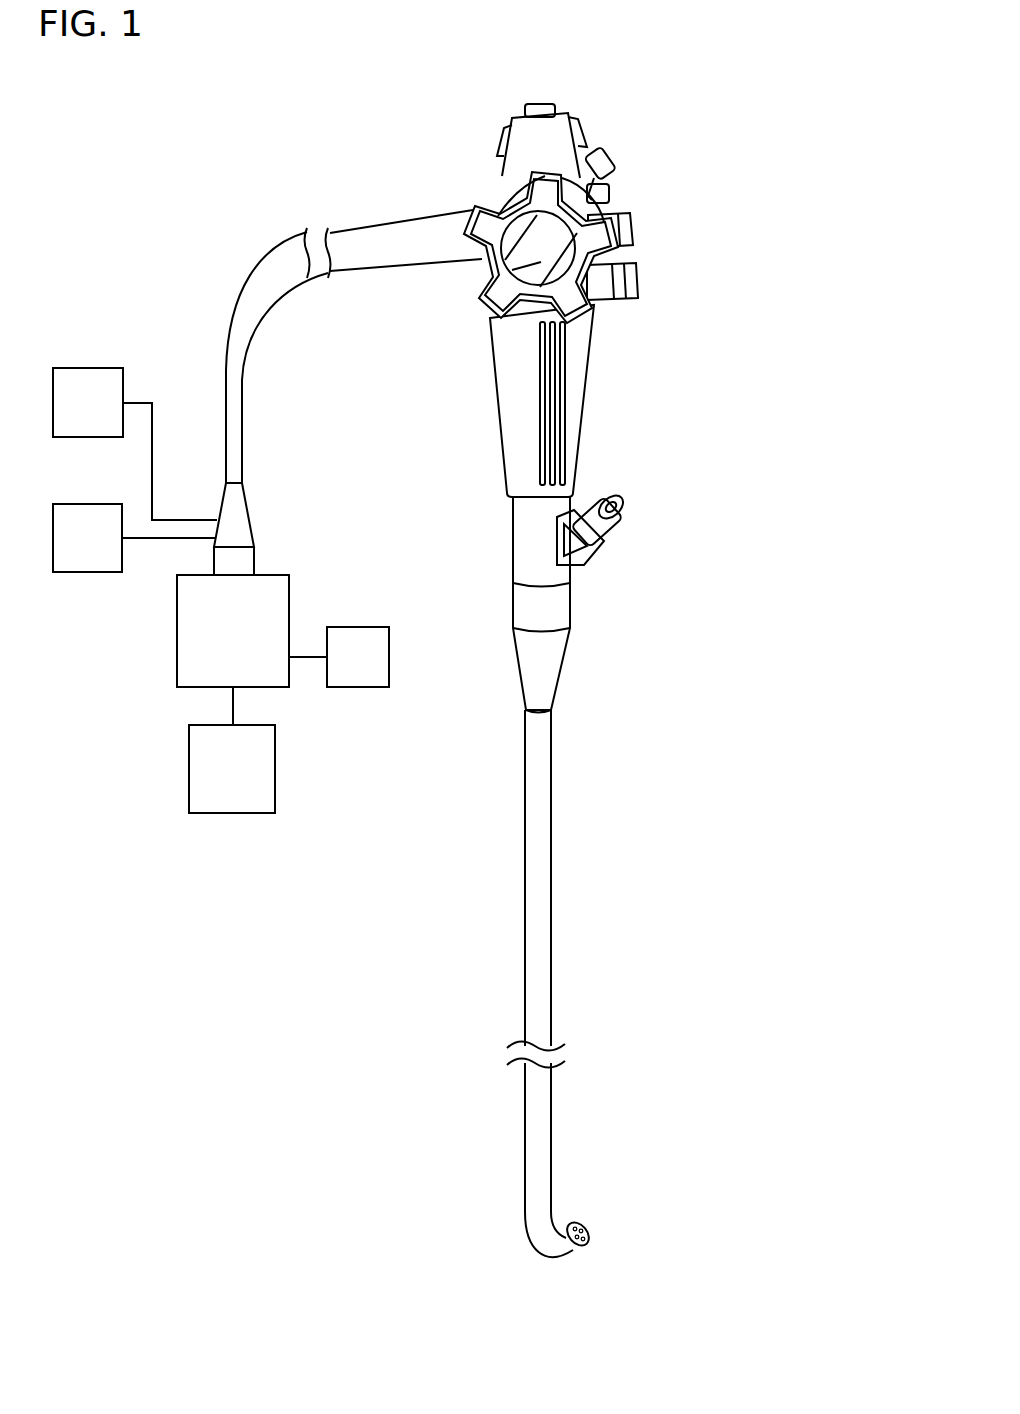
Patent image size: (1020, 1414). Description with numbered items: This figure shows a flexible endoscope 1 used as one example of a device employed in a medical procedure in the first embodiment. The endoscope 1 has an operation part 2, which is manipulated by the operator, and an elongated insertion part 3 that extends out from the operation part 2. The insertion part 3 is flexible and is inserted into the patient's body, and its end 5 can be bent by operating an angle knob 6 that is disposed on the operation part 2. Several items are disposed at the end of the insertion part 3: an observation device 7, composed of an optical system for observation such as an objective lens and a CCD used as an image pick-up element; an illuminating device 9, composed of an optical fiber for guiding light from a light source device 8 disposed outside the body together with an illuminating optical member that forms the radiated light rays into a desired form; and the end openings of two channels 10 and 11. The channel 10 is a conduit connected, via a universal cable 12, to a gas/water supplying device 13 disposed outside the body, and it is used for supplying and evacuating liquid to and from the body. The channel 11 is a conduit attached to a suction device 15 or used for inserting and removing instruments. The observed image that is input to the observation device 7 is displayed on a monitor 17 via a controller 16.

The flexible endoscope 1 is at (687, 170).
The operation part 2 is at (598, 365).
The insertion part 3 is at (553, 897).
The end of the insertion part 5 is at (560, 1258).
The angle knob 6 is at (496, 240).
The observation device 7 is at (594, 1242).
The light source device 8 is at (360, 632).
The illuminating device 9 is at (576, 1227).
The channel 10 is at (578, 1250).
The channel 11 is at (587, 1228).
The universal cable 12 is at (383, 240).
The gas/water supplying device 13 is at (92, 378).
The suction device 15 is at (91, 512).
The controller 16 is at (185, 633).
The monitor 17 is at (197, 769).